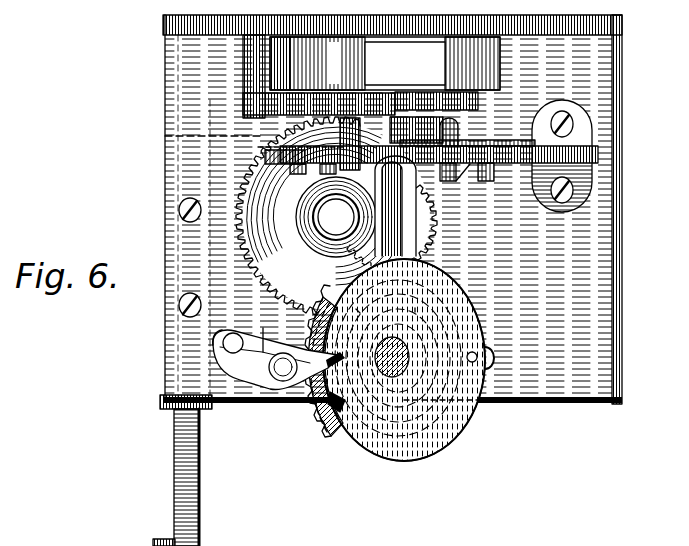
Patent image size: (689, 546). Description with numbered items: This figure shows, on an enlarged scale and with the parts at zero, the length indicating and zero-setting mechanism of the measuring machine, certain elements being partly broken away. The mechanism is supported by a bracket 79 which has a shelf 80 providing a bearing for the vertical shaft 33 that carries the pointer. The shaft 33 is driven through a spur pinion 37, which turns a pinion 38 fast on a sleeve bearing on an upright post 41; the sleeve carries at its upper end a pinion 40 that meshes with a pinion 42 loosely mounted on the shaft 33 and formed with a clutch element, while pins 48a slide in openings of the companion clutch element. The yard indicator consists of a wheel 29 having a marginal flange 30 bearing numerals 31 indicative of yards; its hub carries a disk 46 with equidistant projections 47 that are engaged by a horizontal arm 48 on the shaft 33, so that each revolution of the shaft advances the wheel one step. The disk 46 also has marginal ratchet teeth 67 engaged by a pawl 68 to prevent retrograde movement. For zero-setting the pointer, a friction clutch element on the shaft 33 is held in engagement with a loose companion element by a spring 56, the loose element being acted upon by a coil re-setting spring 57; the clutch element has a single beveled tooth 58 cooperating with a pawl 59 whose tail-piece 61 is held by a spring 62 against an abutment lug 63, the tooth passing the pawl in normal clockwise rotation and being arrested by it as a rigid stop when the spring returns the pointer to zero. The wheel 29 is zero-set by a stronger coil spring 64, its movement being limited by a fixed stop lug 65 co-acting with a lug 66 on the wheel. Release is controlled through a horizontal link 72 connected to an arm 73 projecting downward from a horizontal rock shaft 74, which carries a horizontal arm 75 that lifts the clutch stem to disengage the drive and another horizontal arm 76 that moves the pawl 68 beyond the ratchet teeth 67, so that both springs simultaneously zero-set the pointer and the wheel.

The yard indicator wheel 29 is at (450, 36).
The marginal flange 30 is at (372, 42).
The numerals 31 is at (303, 36).
The vertical shaft 33 is at (400, 356).
The spur pinion 37 is at (435, 92).
The pinion 38 is at (248, 260).
The pinion 40 is at (292, 296).
The upright post 41 is at (336, 217).
The pinion 42 is at (328, 424).
The disk 46 is at (258, 147).
The projections 47 is at (266, 163).
The horizontal arm 48 is at (406, 222).
The pins 48a is at (477, 351).
The spring 56 is at (355, 302).
The coil re-setting spring 57 is at (327, 398).
The tooth 58 is at (334, 346).
The pawl 59 is at (263, 330).
The tail-piece 61 is at (263, 378).
The spring 62 is at (212, 352).
The abutment lug 63 is at (230, 338).
The coil spring 64 is at (500, 140).
The fixed stop lug 65 is at (243, 50).
The lug 66 is at (244, 72).
The marginal ratchet teeth 67 is at (356, 147).
The pawl 68 is at (516, 165).
The horizontal link 72 is at (155, 543).
The arm 73 is at (199, 482).
The horizontal rock shaft 74 is at (162, 392).
The horizontal arm 75 is at (412, 302).
The horizontal arm 76 is at (220, 136).
The bracket 79 is at (623, 42).
The shelf 80 is at (604, 268).